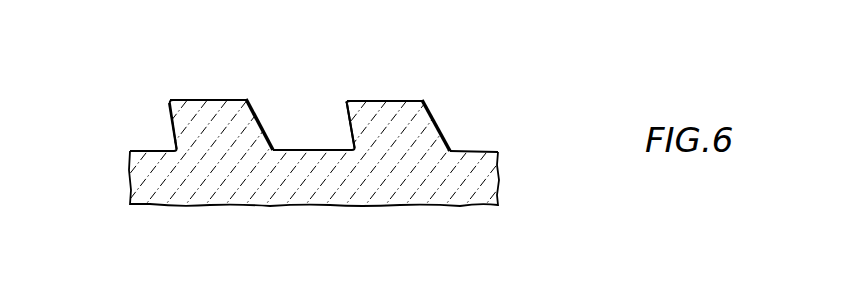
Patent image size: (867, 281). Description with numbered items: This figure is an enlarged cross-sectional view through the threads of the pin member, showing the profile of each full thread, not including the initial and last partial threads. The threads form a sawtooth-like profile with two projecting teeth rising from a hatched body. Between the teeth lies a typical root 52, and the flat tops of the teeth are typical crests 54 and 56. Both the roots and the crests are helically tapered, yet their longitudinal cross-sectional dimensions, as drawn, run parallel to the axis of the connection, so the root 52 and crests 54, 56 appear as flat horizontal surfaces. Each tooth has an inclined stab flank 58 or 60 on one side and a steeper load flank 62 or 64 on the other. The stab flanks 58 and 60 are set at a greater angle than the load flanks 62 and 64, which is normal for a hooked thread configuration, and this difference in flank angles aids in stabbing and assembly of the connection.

The root 52 is at (305, 149).
The crest 54 is at (385, 99).
The crest 56 is at (212, 99).
The stab flank 58 is at (440, 130).
The stab flank 60 is at (262, 121).
The load flank 62 is at (346, 117).
The load flank 64 is at (170, 123).